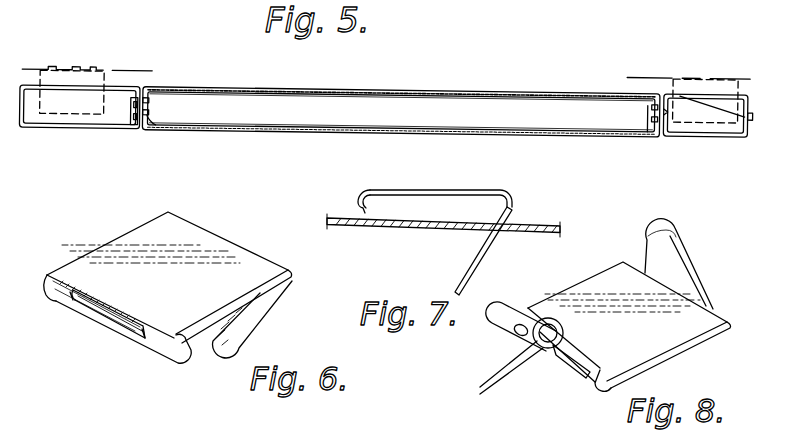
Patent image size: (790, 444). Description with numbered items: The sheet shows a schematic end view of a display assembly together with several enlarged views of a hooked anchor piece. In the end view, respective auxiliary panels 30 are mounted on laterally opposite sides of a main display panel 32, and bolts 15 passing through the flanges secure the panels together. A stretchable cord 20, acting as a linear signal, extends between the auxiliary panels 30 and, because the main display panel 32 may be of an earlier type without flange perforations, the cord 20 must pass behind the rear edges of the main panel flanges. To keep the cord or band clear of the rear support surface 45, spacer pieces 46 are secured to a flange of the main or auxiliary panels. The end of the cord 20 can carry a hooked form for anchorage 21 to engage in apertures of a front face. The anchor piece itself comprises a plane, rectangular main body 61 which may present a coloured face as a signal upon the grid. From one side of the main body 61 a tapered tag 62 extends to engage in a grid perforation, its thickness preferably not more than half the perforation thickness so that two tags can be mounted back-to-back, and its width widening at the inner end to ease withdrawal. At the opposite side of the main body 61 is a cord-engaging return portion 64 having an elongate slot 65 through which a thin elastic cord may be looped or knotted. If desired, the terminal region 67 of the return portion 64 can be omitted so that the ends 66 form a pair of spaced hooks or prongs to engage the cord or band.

In FIG. 5, the bolts 15 is at (154, 128).
In FIG. 5, the cord 20 is at (513, 88).
In FIG. 5, the hooked form for anchorage 21 is at (531, 131).
In FIG. 7, the hooked form for anchorage 21 is at (443, 225).
In FIG. 5, the auxiliary panels 30 is at (117, 110).
In FIG. 5, the main display panel 32 is at (387, 106).
In FIG. 5, the rear support surface 45 is at (145, 68).
In FIG. 5, the spacer pieces 46 is at (70, 70).
In FIG. 6, the main body 61 is at (218, 252).
In FIG. 7, the main body 61 is at (444, 191).
In FIG. 8, the main body 61 is at (655, 353).
In FIG. 6, the tapered tag 62 is at (219, 344).
In FIG. 8, the tapered tag 62 is at (664, 232).
In FIG. 6, the cord-engaging return portion 64 is at (148, 339).
In FIG. 7, the cord-engaging return portion 64 is at (366, 190).
In FIG. 8, the cord-engaging return portion 64 is at (590, 378).
In FIG. 6, the elongate slot 65 is at (96, 306).
In FIG. 8, the elongate slot 65 is at (563, 354).
In FIG. 6, the ends 66 is at (52, 278).
In FIG. 6, the terminal region 67 is at (118, 324).